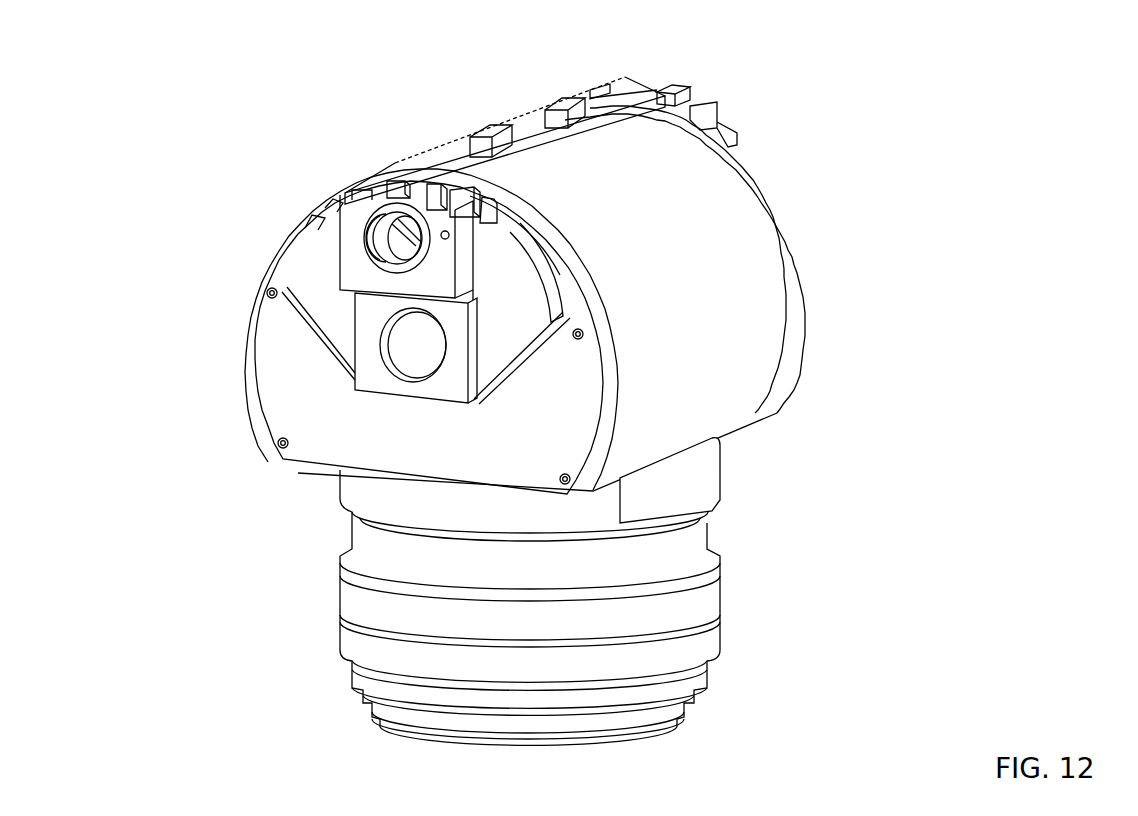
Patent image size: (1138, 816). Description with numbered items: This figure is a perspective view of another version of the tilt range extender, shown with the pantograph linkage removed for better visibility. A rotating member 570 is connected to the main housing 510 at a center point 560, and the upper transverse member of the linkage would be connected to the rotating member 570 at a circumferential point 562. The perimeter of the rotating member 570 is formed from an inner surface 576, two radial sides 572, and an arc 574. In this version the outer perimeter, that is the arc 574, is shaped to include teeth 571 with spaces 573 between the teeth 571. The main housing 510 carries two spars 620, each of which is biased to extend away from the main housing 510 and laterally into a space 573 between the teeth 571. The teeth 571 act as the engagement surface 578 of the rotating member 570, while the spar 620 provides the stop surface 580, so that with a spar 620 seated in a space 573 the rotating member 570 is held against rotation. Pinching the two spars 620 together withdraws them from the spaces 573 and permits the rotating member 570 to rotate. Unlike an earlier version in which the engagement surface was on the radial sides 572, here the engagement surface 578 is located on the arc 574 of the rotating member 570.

The main housing 510 is at (710, 318).
The center point 560 is at (413, 348).
The circumferential point 562 is at (403, 240).
The rotating member 570 is at (323, 290).
The teeth 571 is at (523, 220).
The radial sides 572 is at (317, 338).
The spaces 573 is at (410, 186).
The arc 574 is at (548, 277).
The inner surface 576 is at (393, 397).
The engagement surface 578 is at (383, 181).
The stop surface 580 is at (413, 175).
The spars 620 is at (459, 158).